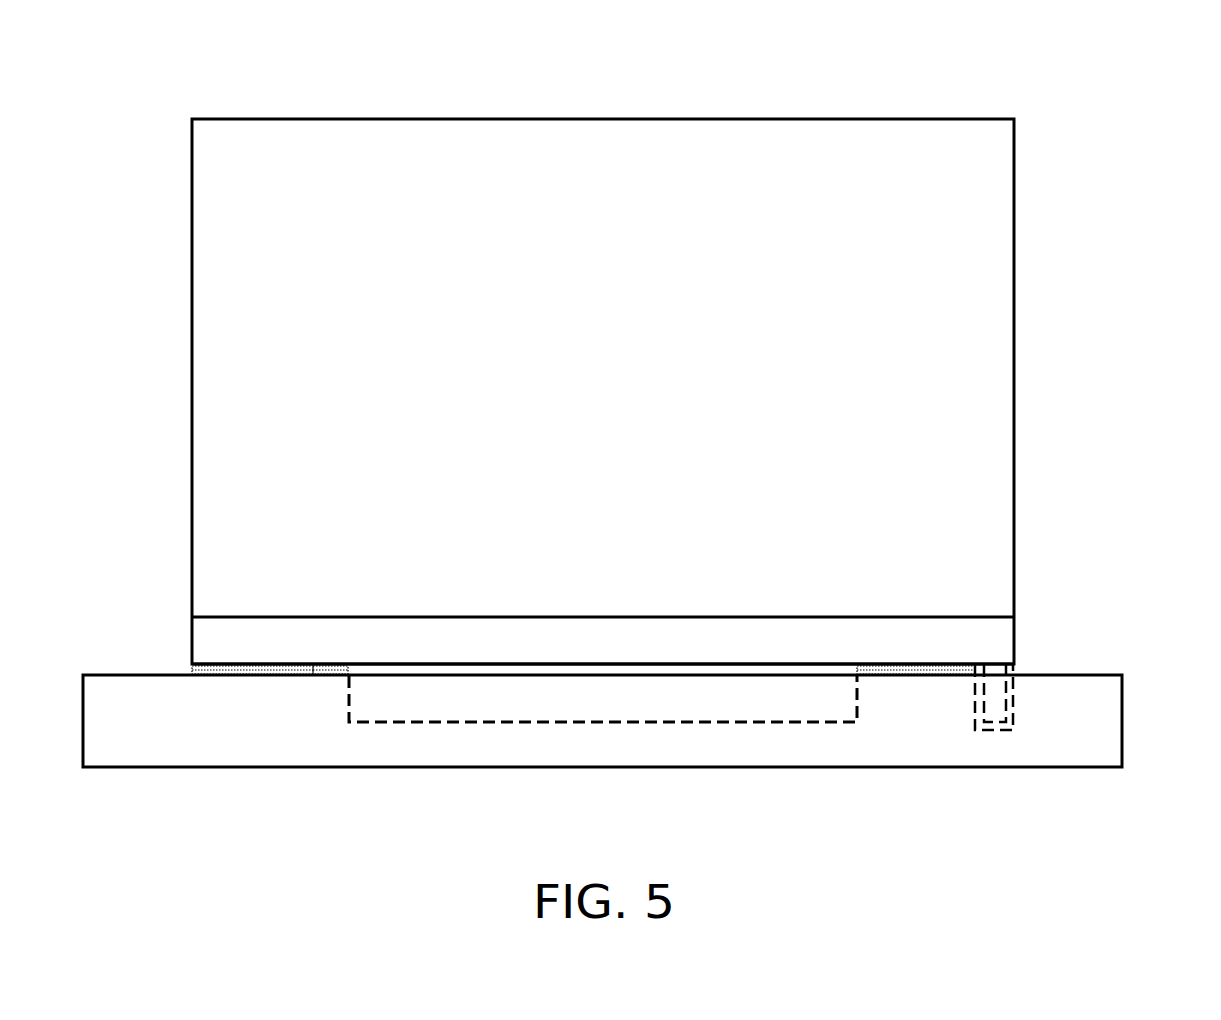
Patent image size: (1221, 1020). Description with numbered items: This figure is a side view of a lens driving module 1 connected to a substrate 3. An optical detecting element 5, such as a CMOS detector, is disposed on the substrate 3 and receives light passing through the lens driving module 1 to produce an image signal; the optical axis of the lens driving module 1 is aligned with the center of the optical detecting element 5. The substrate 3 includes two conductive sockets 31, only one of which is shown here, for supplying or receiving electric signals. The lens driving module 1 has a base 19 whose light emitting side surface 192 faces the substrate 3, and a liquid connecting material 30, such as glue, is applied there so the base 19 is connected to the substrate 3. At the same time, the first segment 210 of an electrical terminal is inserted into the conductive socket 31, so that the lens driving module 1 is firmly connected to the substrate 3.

The lens driving module 1 is at (133, 92).
The substrate 3 is at (1077, 735).
The optical detecting element 5 is at (798, 700).
The base 19 is at (985, 640).
The liquid connecting material 30 is at (240, 677).
The conductive socket 31 is at (996, 733).
The light emitting side surface 192 is at (316, 677).
The first segment 210 is at (993, 703).